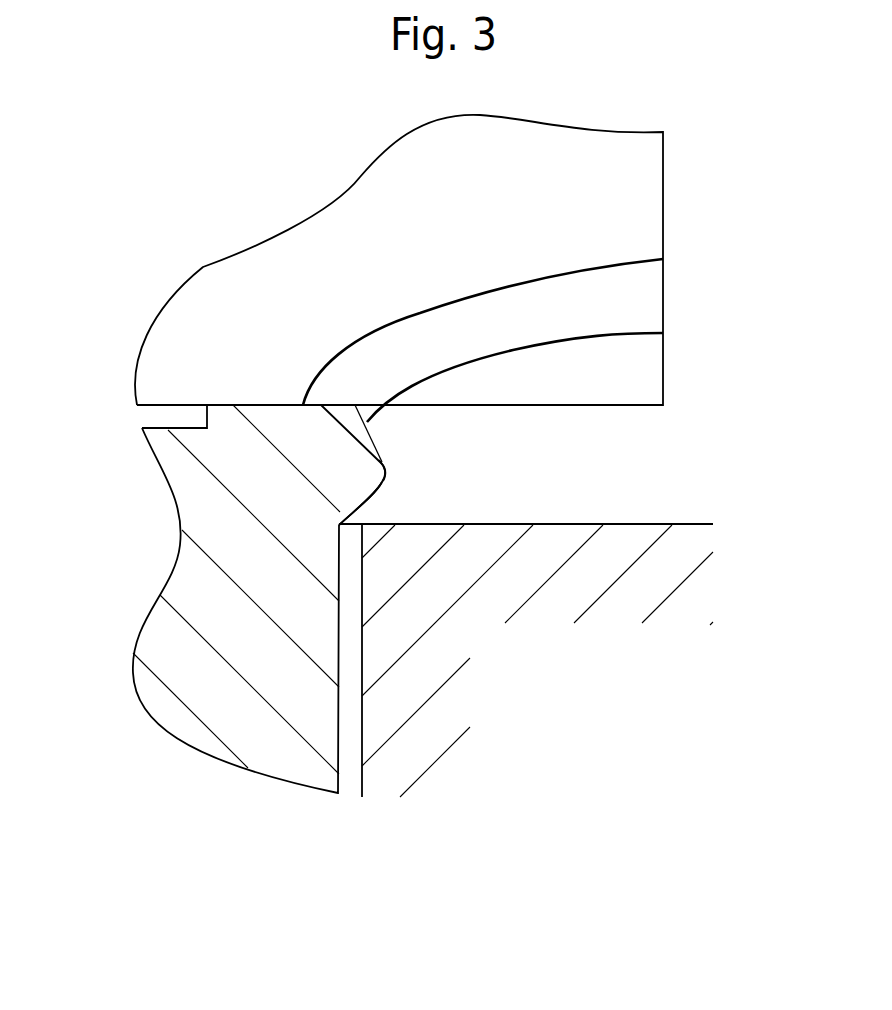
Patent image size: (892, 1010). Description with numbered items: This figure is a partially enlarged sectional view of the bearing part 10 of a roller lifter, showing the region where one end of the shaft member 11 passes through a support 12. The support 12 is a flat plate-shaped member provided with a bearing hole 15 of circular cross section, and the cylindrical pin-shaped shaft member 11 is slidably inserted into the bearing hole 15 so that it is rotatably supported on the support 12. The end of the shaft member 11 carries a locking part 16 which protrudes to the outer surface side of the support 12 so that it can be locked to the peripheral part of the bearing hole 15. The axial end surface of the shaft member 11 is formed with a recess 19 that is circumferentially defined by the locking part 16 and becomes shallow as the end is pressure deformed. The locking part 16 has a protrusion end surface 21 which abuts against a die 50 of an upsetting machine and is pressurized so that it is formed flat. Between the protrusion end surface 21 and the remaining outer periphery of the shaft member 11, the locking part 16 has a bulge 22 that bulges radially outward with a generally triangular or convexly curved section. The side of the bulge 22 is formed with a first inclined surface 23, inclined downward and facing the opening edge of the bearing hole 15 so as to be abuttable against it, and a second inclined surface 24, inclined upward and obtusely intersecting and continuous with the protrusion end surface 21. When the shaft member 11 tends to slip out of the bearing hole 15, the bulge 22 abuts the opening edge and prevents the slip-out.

The bearing part 10 is at (779, 398).
The shaft member 11 is at (308, 770).
The support 12 is at (702, 527).
The bearing hole 15 is at (362, 607).
The locking part 16 is at (387, 459).
The recess 19 is at (178, 425).
The protrusion end surface 21 is at (663, 259).
The bulge 22 is at (369, 449).
The first inclined surface 23 is at (370, 495).
The second inclined surface 24 is at (663, 333).
The die 50 is at (663, 188).